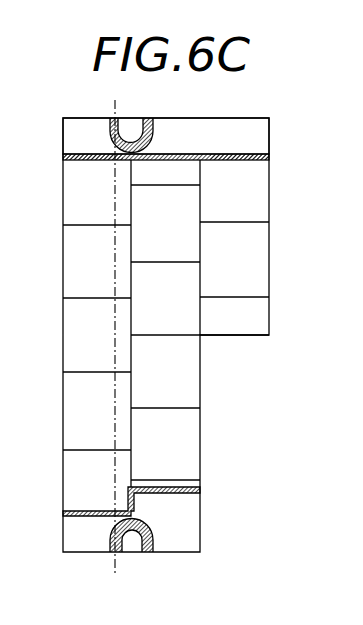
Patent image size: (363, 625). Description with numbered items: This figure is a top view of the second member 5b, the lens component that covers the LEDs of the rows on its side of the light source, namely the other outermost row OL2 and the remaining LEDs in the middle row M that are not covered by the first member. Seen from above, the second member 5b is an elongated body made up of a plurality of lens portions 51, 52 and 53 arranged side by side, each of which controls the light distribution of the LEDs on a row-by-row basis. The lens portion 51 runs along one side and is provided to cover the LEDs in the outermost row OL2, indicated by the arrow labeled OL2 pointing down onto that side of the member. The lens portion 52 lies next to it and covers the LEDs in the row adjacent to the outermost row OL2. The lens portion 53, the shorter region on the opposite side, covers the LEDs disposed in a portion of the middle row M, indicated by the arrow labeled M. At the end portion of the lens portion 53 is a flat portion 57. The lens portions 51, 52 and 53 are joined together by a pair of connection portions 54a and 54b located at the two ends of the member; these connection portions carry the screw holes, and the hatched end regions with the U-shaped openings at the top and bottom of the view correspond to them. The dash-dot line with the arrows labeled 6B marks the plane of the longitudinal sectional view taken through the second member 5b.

The second member 5b is at (44, 121).
The lens portion 51 is at (98, 262).
The lens portion 52 is at (182, 385).
The lens portion 53 is at (257, 214).
The connection portion 54a is at (270, 134).
The connection portion 54b is at (202, 514).
The flat portion 57 is at (260, 315).
The outermost row OL2 is at (98, 151).
The middle row M is at (242, 151).
The section line 6B is at (117, 110).